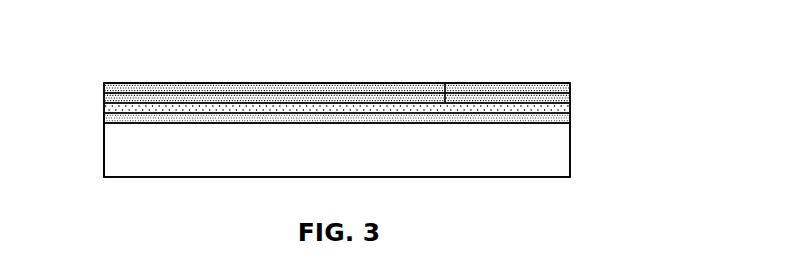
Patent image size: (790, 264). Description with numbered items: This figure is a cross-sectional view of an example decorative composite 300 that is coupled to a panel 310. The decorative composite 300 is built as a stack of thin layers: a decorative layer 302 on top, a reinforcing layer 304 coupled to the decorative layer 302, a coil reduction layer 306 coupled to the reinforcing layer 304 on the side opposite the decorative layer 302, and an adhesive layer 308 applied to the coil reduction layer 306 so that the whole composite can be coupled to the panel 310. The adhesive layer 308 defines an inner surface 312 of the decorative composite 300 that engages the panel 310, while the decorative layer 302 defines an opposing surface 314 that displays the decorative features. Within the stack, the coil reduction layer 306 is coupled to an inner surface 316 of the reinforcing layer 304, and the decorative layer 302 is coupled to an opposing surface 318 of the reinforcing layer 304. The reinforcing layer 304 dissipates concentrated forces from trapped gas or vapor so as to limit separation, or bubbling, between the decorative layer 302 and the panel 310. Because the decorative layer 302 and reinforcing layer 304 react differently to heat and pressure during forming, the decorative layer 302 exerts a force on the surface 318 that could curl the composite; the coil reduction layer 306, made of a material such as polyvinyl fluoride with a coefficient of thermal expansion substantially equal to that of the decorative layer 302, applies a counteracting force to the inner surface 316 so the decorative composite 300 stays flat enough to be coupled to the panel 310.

The decorative composite 300 is at (592, 36).
The decorative layer 302 is at (570, 88).
The reinforcing layer 304 is at (570, 98).
The coil reduction layer 306 is at (570, 110).
The adhesive layer 308 is at (570, 120).
The panel 310 is at (537, 165).
The inner surface 312 is at (117, 123).
The opposing surface 314 is at (175, 83).
The inner surface of the reinforcing layer 316 is at (445, 84).
The opposing surface of the reinforcing layer 318 is at (393, 93).